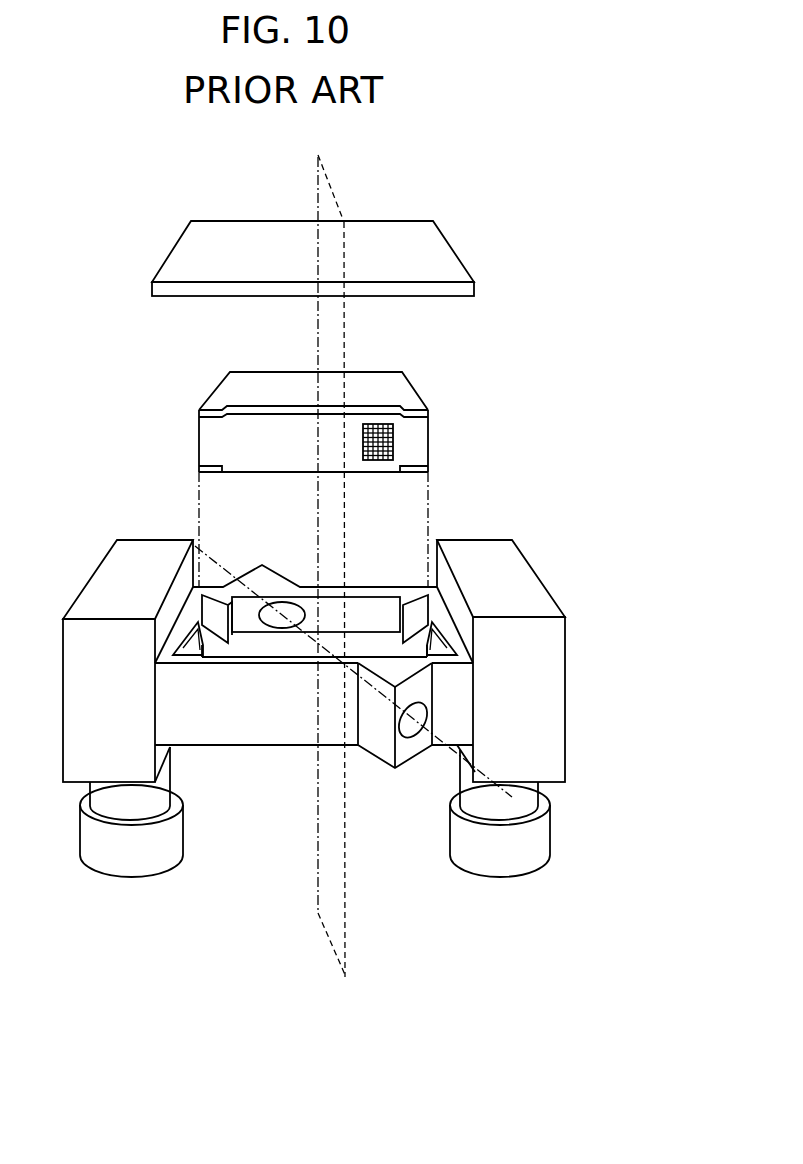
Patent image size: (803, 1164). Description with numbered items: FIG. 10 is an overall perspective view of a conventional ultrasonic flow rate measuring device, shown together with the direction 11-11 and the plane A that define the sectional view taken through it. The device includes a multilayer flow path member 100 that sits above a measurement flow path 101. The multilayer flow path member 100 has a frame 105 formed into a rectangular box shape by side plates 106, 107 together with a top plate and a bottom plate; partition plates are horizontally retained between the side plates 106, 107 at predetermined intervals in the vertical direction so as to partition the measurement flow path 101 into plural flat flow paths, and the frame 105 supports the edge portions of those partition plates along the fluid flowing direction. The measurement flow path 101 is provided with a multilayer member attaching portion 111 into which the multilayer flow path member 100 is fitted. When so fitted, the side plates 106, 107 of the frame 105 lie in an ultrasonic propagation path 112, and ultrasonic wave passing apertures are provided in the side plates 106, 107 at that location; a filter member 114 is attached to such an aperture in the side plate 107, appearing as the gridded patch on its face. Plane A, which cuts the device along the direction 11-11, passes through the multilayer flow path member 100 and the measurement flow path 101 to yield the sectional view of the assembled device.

The direction 11- 11 is at (324, 189).
The plane A is at (327, 210).
The multilayer flow path member 100 is at (316, 456).
The measurement flow path 101 is at (310, 650).
The frame 105 is at (208, 397).
The side plate 106 is at (230, 371).
The side plate 107 is at (228, 447).
The multilayer member attaching portion 111 is at (353, 612).
The ultrasonic propagation path 112 is at (222, 563).
The filter member 114 is at (392, 443).